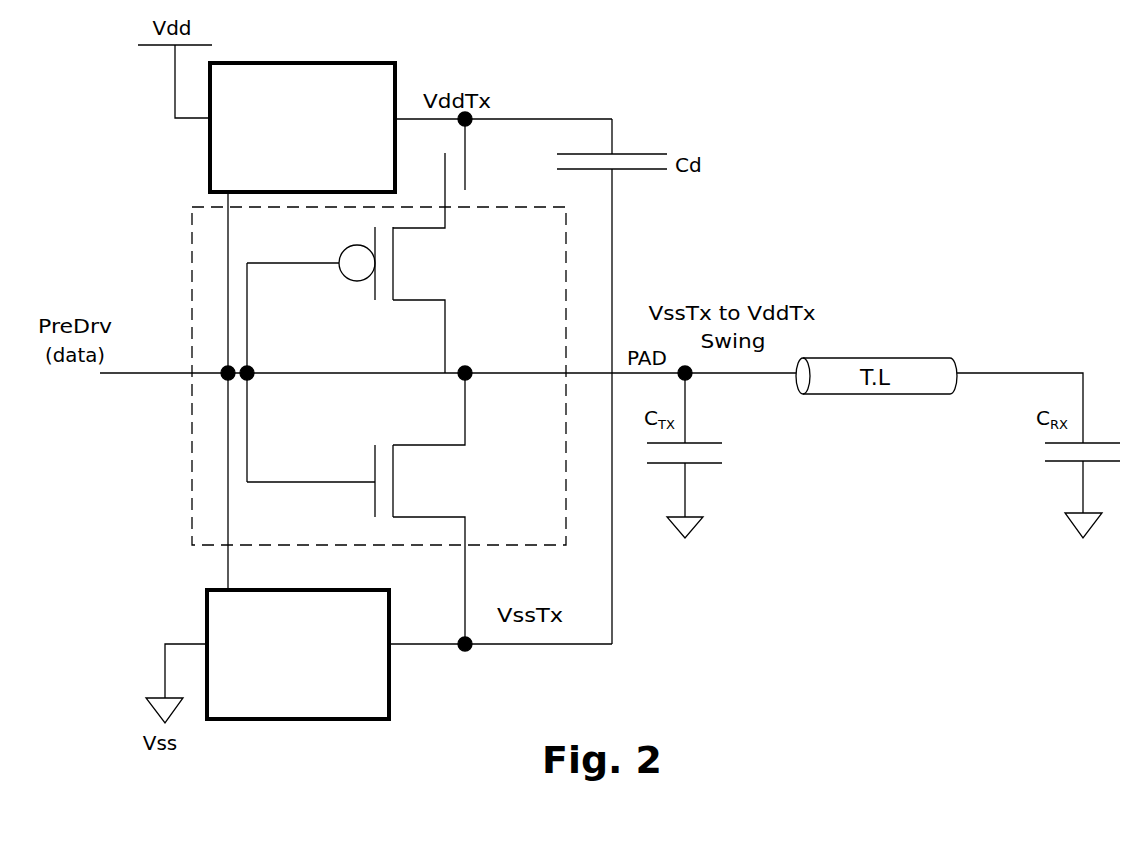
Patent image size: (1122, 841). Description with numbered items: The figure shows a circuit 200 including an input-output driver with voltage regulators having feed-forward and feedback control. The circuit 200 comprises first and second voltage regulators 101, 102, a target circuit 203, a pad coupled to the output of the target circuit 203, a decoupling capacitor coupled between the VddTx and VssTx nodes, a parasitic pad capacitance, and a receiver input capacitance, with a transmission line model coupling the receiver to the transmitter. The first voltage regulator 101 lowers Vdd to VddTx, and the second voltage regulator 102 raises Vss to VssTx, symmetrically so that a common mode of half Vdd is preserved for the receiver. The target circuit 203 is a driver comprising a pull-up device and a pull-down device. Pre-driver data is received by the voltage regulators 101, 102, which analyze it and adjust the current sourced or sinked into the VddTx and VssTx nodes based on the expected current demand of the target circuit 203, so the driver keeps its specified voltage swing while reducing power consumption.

The circuit 200 is at (738, 43).
The first voltage regulator 101 is at (302, 127).
The second voltage regulator 102 is at (298, 654).
The target circuit 203 is at (192, 207).